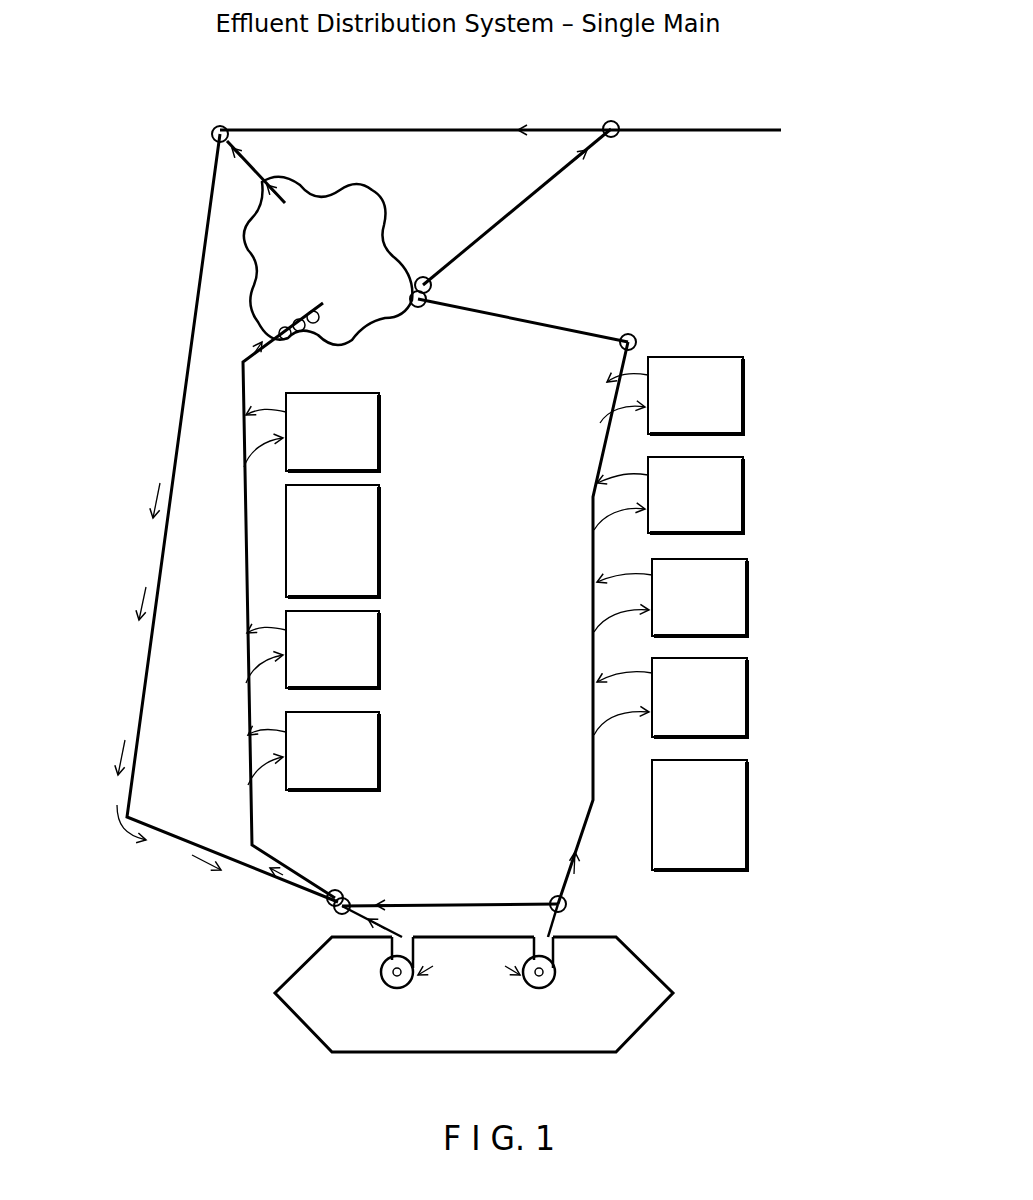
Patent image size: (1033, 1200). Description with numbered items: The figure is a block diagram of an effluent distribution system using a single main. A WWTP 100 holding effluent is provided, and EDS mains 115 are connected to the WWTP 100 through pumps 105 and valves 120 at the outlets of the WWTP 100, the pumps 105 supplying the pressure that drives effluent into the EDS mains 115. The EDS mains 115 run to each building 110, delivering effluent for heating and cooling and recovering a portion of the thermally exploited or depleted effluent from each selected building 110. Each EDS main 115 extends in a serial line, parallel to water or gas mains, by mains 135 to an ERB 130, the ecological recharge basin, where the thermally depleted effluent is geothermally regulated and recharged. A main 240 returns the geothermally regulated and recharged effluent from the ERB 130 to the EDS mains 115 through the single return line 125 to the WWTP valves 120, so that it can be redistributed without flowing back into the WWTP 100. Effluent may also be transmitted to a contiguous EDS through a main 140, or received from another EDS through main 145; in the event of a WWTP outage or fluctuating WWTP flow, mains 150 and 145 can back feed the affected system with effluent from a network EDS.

The WWTP 100 is at (627, 1037).
The pumps 105 is at (380, 982).
The building 110 is at (382, 447).
The EDS mains 115 is at (245, 603).
The valves 120 is at (222, 126).
The single return line 125 is at (145, 663).
The ERB 130 is at (370, 193).
The mains 135 is at (560, 328).
The main 140 is at (498, 223).
The main 145 is at (440, 128).
The main 150 is at (705, 133).
The main 240 is at (244, 161).